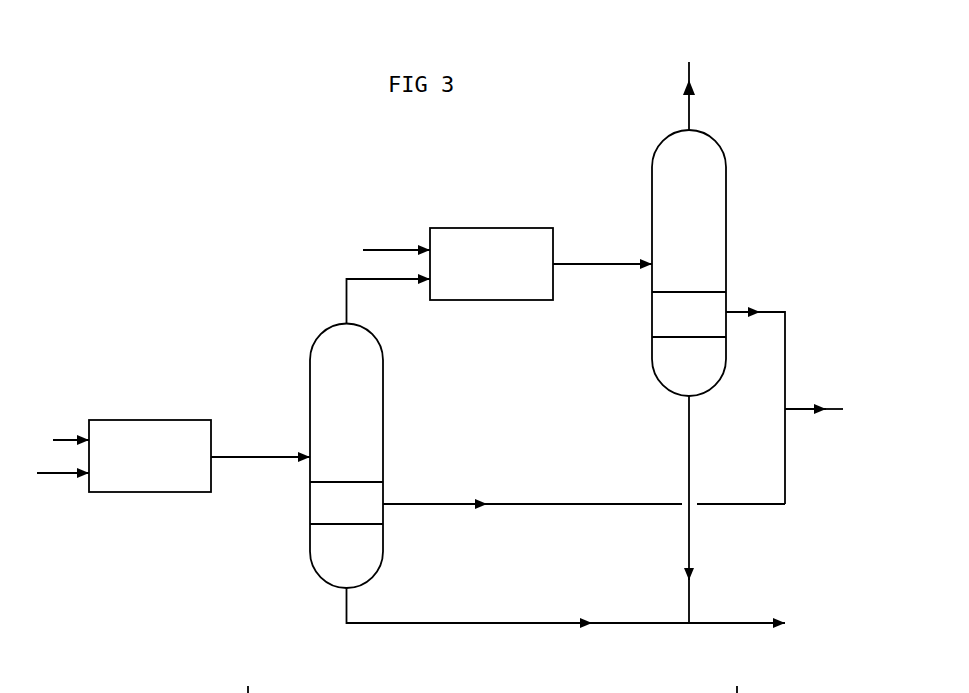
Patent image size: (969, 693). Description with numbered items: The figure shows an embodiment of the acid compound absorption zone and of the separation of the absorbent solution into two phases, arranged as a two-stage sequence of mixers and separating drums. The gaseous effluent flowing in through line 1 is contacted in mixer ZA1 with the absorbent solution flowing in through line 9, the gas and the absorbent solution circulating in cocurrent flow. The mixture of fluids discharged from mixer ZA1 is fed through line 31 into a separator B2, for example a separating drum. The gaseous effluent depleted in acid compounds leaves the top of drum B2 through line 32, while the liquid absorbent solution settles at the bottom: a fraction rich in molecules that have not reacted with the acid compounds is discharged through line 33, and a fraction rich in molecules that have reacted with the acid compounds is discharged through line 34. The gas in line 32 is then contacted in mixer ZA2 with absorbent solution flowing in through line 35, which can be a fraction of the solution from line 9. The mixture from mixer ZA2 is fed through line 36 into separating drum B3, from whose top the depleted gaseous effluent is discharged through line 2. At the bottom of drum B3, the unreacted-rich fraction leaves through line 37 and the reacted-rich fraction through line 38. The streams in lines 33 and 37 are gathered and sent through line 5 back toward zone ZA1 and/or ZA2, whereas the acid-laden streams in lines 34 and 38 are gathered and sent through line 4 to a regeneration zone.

The line 1 is at (53, 477).
The line 9 is at (60, 440).
The line 2 is at (690, 97).
The line 4 is at (753, 621).
The line 5 is at (805, 408).
The line 31 is at (272, 458).
The line 32 is at (345, 307).
The line 33 is at (530, 503).
The line 34 is at (495, 620).
The line 35 is at (393, 250).
The line 36 is at (623, 263).
The line 37 is at (775, 311).
The line 38 is at (687, 427).
The mixer ZA1 is at (150, 456).
The mixer ZA2 is at (491, 264).
The separator B2 is at (383, 390).
The separating drum B3 is at (727, 180).